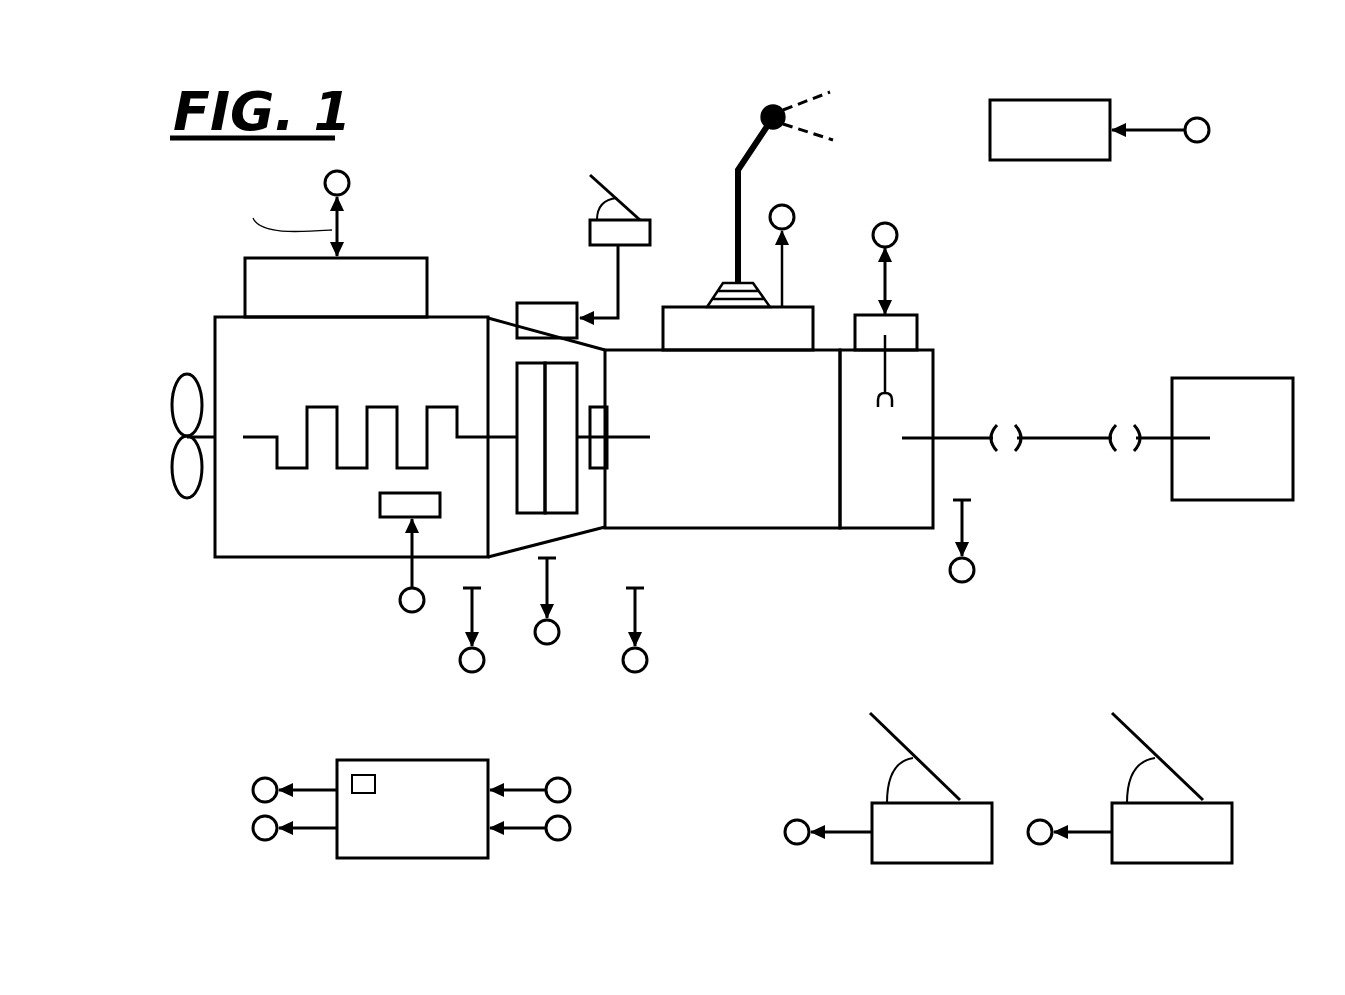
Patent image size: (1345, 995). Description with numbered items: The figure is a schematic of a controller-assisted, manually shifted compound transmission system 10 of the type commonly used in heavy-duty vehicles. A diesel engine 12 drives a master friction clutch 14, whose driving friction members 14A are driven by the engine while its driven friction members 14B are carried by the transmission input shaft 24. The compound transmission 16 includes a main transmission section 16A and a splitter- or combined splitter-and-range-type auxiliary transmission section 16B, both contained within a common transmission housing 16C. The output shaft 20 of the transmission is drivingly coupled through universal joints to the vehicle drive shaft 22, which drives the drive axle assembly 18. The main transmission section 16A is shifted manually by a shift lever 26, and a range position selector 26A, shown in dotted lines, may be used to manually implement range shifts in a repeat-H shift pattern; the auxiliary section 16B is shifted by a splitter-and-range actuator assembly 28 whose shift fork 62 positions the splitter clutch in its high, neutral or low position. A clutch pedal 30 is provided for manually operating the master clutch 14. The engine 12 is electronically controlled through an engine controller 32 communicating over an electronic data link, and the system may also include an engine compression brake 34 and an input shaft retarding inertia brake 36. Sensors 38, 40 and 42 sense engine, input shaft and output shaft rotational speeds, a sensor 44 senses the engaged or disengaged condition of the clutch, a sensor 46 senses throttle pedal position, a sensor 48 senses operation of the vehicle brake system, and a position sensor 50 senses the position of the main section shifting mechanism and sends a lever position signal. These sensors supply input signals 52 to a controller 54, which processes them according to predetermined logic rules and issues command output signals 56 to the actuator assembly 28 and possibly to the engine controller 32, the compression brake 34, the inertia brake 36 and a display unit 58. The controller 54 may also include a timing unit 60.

The system 10 is at (1080, 278).
The engine 12 is at (305, 532).
The master friction clutch 14 is at (572, 522).
The driving friction members 14A is at (532, 392).
The driven friction members 14B is at (560, 468).
The compound transmission 16 is at (722, 565).
The main transmission section 16A is at (797, 503).
The auxiliary transmission section 16B is at (917, 382).
The transmission housing 16C is at (737, 525).
The drive axle assembly 18 is at (1217, 387).
The output shaft 20 is at (960, 437).
The drive shaft 22 is at (1082, 441).
The transmission input shaft 24 is at (633, 442).
The shift lever 26 is at (742, 158).
The range position selector 26A is at (827, 100).
The splitter-and-range actuator assembly 28 is at (920, 327).
The clutch pedal 30 is at (598, 232).
The engine controller 32 is at (367, 287).
The engine compression brake 34 is at (400, 510).
The inertia brake 36 is at (598, 423).
The engine speed sensor 38 is at (470, 603).
The input shaft speed sensor 40 is at (640, 602).
The output shaft speed sensor 42 is at (967, 530).
The clutch condition sensor 44 is at (548, 573).
The throttle pedal position sensor 46 is at (1173, 842).
The brake system sensor 48 is at (932, 842).
The position sensor 50 is at (815, 308).
The input signals 52 is at (517, 857).
The controller 54 is at (398, 842).
The command output signals 56 is at (308, 857).
The display unit 58 is at (1057, 152).
The timing unit 60 is at (377, 790).
The shift fork 62 is at (880, 368).